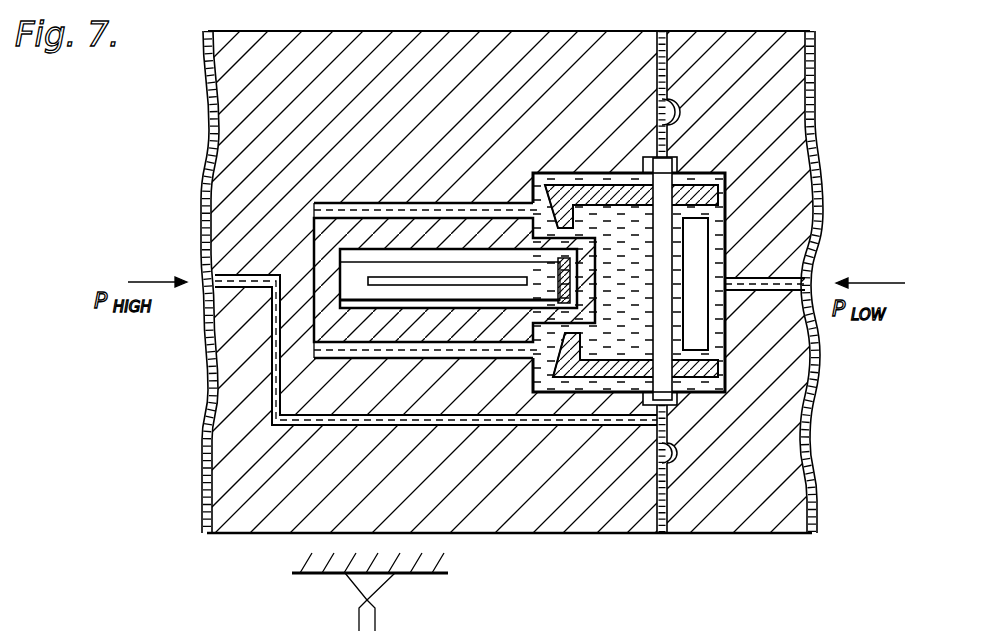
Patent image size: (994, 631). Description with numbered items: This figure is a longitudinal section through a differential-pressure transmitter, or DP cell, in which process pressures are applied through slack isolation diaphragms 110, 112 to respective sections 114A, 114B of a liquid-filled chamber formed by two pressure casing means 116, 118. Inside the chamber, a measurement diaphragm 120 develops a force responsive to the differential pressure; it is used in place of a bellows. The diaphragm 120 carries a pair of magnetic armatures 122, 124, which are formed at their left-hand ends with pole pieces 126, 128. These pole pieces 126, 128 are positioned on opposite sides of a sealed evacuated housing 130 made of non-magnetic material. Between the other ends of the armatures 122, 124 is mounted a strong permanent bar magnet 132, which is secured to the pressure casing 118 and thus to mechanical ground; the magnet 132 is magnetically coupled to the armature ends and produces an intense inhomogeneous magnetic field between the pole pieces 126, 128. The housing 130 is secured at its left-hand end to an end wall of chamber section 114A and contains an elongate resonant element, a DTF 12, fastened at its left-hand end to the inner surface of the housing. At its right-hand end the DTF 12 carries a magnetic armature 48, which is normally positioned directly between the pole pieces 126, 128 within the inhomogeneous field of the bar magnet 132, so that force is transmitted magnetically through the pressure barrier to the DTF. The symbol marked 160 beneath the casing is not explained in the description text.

The DTF 12 is at (353, 282).
The magnetic armature 48 is at (558, 287).
The slack isolation diaphragm 110 is at (205, 157).
The slack isolation diaphragm 112 is at (822, 243).
The chamber section 114A is at (619, 367).
The chamber section 114B is at (703, 177).
The pressure casing means 116 is at (430, 47).
The pressure casing means 118 is at (763, 57).
The measurement diaphragm 120 is at (667, 77).
The magnetic armature 122 is at (601, 193).
The magnetic armature 124 is at (633, 327).
The pole piece 126 is at (563, 214).
The pole piece 128 is at (573, 345).
The sealed evacuated housing 130 is at (381, 218).
The permanent bar magnet 132 is at (697, 323).
The ground connection 160 is at (363, 583).